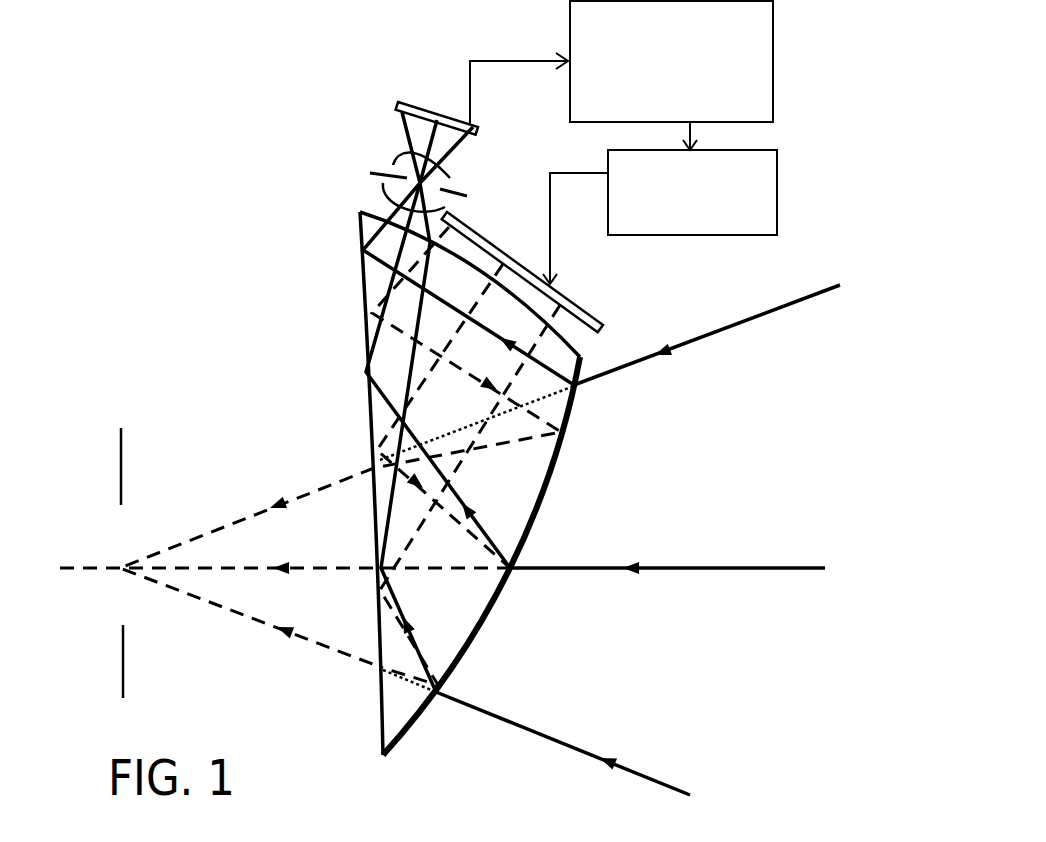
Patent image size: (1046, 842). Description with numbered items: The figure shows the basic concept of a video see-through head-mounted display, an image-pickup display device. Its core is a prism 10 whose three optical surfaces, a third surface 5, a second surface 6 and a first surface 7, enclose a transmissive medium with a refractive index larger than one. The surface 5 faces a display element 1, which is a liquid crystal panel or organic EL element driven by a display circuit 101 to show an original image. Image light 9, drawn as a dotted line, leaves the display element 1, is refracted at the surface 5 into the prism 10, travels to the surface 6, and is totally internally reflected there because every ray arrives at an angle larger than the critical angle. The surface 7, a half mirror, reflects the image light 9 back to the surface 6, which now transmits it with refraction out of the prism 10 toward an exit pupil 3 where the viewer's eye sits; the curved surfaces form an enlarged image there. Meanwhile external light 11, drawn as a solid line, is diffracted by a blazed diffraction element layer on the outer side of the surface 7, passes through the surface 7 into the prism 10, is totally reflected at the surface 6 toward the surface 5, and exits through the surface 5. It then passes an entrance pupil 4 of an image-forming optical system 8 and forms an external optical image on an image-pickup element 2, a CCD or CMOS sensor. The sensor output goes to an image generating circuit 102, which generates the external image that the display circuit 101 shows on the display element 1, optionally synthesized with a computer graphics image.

The display element 1 is at (520, 258).
The image-pickup element 2 is at (412, 98).
The exit pupil 3 is at (122, 456).
The entrance pupil 4 is at (374, 175).
The third surface 5 is at (482, 279).
The second surface 6 is at (373, 422).
The first surface 7 is at (556, 462).
The image-forming optical system 8 is at (449, 172).
The image light 9 is at (333, 567).
The prism 10 is at (448, 603).
The external light 11 is at (760, 568).
The display circuit 101 is at (777, 183).
The image generating circuit 102 is at (773, 80).